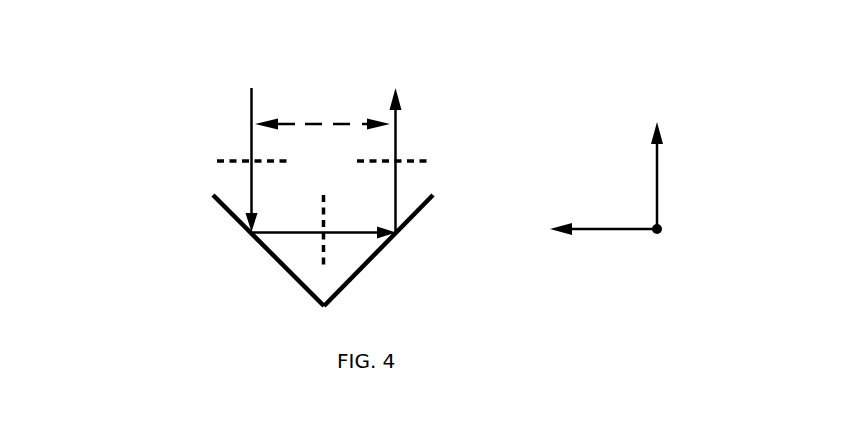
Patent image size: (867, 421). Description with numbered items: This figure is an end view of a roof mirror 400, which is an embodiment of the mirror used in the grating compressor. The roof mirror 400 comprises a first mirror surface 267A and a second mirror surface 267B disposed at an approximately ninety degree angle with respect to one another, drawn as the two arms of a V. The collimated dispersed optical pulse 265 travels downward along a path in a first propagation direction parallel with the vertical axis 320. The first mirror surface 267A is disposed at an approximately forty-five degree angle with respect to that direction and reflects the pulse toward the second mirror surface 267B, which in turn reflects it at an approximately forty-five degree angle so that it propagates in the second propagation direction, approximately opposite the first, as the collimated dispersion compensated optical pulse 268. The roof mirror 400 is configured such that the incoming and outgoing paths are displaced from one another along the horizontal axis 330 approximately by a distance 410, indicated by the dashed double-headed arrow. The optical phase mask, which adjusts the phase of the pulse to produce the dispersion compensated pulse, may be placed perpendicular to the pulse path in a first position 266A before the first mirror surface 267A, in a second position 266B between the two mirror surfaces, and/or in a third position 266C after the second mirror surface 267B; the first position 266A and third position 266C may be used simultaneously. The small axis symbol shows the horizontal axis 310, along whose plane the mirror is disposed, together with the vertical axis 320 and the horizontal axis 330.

The roof mirror 400 is at (93, 76).
The collimated dispersed optical pulse 265 is at (251, 203).
The collimated dispersion compensated optical pulse 268 is at (397, 125).
The first position 266A is at (247, 161).
The second position 266B is at (327, 222).
The third position 266C is at (406, 160).
The first mirror surface 267A is at (272, 255).
The second mirror surface 267B is at (378, 251).
The distance 410 is at (311, 124).
The horizontal axis 310 is at (659, 235).
The vertical axis 320 is at (659, 166).
The horizontal axis 330 is at (607, 233).